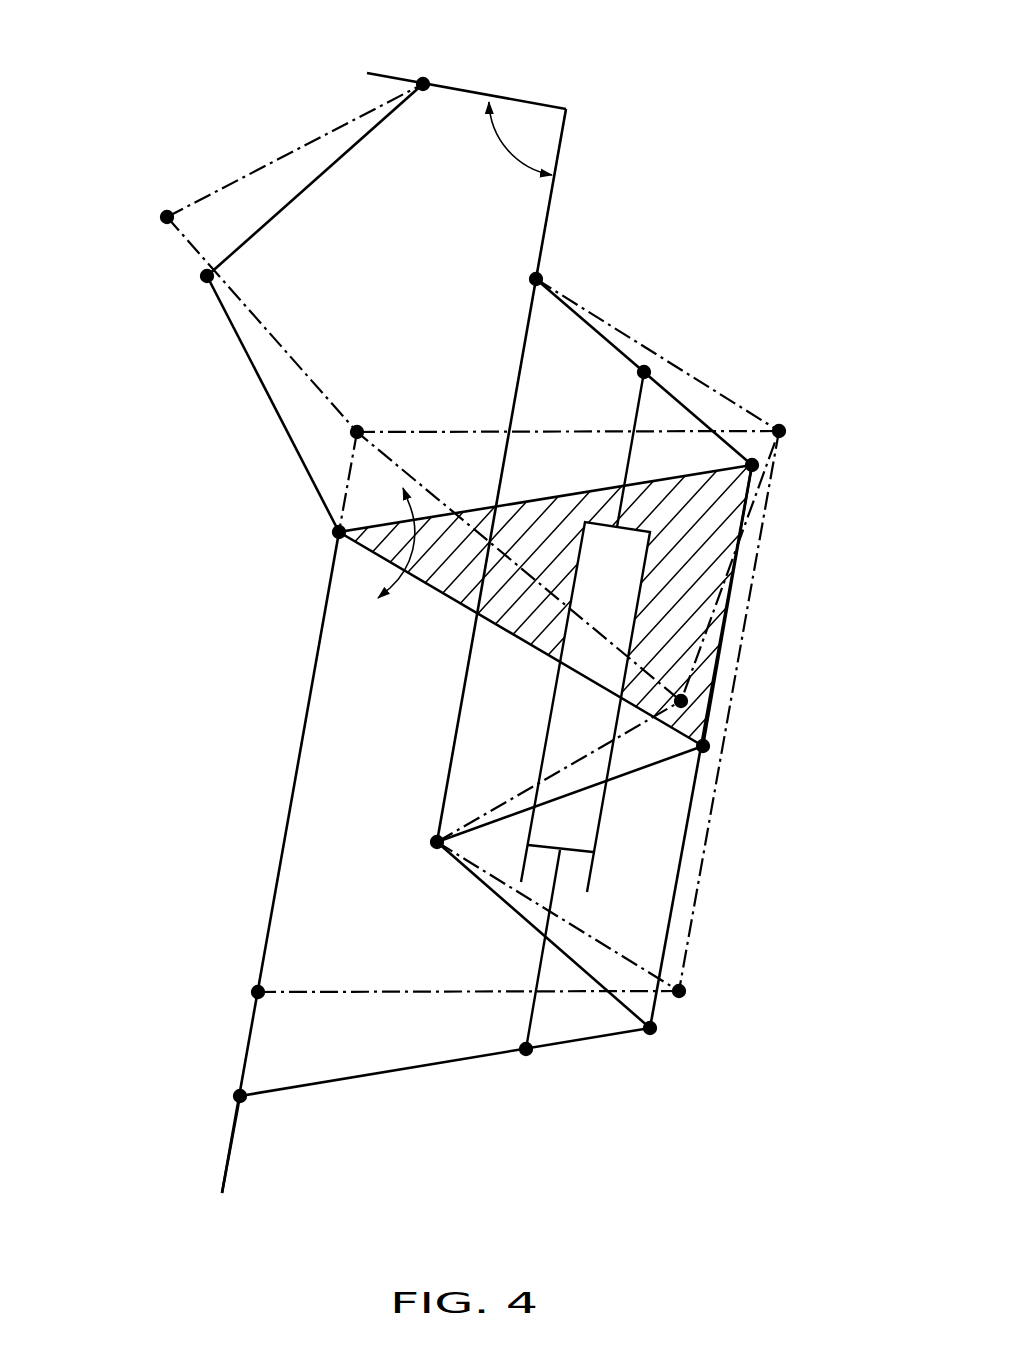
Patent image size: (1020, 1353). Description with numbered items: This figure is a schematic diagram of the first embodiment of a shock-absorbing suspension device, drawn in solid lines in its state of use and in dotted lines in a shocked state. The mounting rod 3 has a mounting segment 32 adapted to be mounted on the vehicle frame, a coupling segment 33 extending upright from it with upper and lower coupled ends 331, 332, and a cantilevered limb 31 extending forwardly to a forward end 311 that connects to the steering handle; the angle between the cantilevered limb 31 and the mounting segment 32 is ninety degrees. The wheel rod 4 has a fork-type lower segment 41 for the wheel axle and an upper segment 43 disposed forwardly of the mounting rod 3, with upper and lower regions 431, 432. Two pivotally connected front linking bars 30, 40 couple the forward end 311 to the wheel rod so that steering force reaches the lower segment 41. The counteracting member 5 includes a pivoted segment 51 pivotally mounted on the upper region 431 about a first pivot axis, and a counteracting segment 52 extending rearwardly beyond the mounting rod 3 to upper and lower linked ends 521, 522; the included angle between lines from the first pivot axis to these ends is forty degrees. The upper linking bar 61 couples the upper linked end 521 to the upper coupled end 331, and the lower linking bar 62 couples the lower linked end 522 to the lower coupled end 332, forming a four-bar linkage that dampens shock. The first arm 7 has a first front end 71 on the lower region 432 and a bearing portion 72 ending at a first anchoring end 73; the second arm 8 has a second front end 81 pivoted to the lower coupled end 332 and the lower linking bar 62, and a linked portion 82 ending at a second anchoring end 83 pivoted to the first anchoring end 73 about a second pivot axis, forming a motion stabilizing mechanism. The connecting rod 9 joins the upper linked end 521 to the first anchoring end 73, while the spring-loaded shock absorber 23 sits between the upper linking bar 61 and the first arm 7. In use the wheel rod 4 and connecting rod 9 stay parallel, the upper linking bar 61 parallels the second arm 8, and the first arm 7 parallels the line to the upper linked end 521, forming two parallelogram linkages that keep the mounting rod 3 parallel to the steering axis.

The mounting rod 3 is at (497, 454).
The cantilevered limb 31 is at (467, 93).
The mounting segment 32 is at (552, 207).
The coupling segment 33 is at (463, 706).
The forward end 311 is at (423, 84).
The upper coupled end 331 is at (536, 279).
The lower coupled end 332 is at (397, 872).
The wheel rod 4 is at (235, 634).
The front linking bar 30 is at (300, 193).
The front linking bar 40 is at (235, 297).
The lower segment 41 is at (232, 1125).
The upper segment 43 is at (206, 804).
The upper region 431 is at (357, 432).
The lower region 432 is at (156, 1055).
The counteracting member 5 is at (544, 627).
The pivoted segment 51 is at (222, 513).
The counteracting segment 52 is at (737, 578).
The upper linked end 521 is at (752, 465).
The lower linked end 522 is at (703, 746).
The upper linking bar 61 is at (628, 337).
The lower linking bar 62 is at (633, 735).
The first arm 7 is at (543, 1089).
The first front end 71 is at (258, 992).
The bearing portion 72 is at (513, 995).
The first anchoring end 73 is at (745, 1036).
The second arm 8 is at (548, 986).
The second front end 81 is at (437, 842).
The linked portion 82 is at (520, 916).
The second anchoring end 83 is at (679, 991).
The connecting rod 9 is at (690, 830).
The spring-loaded shock absorber 23 is at (560, 852).